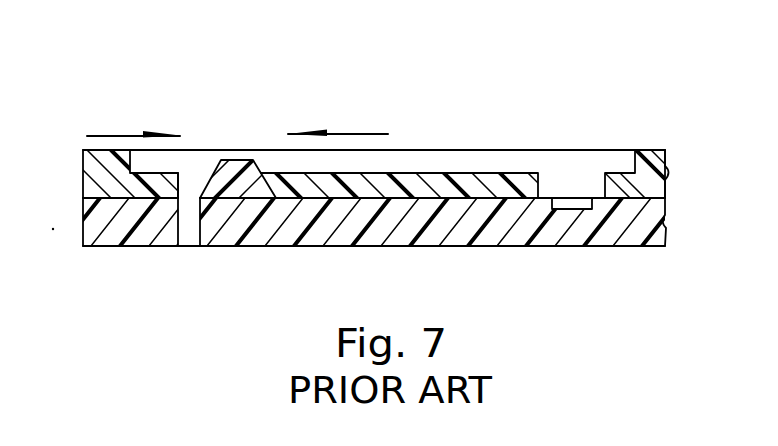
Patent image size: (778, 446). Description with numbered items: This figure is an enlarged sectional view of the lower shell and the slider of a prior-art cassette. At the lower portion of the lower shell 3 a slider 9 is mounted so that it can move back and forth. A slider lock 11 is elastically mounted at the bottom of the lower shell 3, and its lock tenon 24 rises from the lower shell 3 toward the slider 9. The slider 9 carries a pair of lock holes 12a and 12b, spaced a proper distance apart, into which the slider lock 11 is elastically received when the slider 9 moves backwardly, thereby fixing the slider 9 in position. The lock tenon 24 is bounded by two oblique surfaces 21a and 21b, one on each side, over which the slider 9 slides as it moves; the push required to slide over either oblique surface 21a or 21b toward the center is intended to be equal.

The lower shell 3 is at (666, 222).
The slider 9 is at (667, 174).
The slider lock 11 is at (398, 247).
The lock hole 12a is at (605, 181).
The lock hole 12b is at (195, 149).
The oblique surface 21a is at (202, 149).
The oblique surface 21b is at (272, 149).
The lock tenon 24 is at (282, 72).